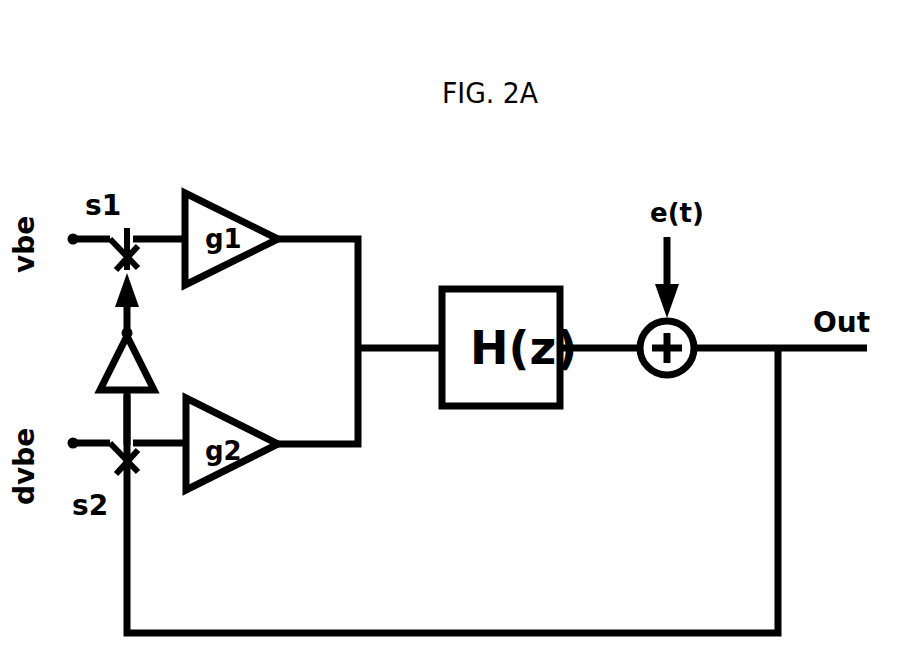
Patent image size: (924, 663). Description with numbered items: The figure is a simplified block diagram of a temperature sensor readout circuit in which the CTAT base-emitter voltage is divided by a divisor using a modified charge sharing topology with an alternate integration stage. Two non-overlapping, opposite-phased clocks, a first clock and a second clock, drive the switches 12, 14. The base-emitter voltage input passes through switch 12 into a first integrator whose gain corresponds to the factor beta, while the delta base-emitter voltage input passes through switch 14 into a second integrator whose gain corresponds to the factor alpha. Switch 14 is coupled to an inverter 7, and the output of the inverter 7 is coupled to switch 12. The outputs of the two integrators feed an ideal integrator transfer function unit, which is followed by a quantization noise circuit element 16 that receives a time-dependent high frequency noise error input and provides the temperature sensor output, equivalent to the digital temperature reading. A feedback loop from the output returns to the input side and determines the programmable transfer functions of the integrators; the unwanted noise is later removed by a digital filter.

The switch 12 is at (109, 253).
The switch 14 is at (109, 462).
The inverter 7 is at (109, 359).
The quantization noise circuit element 16 is at (667, 370).